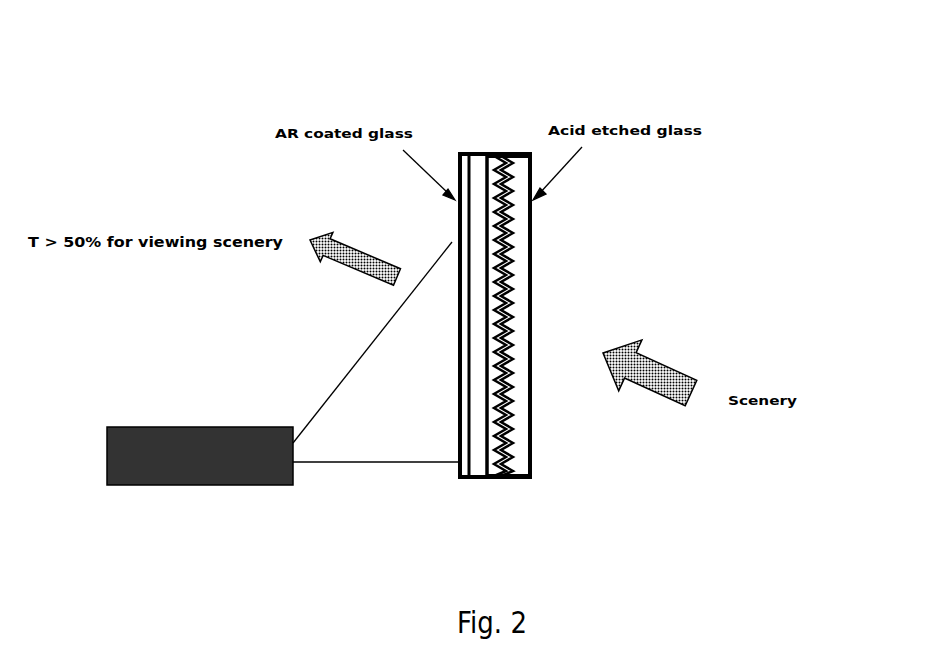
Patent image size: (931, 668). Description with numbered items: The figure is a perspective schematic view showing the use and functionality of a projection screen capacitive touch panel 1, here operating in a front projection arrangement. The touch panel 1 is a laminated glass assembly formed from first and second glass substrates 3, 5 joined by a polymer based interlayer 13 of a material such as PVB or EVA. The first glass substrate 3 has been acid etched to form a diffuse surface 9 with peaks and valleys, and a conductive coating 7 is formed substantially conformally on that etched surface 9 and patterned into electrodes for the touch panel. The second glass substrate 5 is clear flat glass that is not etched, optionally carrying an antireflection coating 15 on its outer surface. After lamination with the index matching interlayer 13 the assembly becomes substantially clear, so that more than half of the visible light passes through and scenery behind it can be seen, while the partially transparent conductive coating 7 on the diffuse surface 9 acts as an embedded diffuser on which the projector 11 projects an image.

The projected capacitive touch panel 1 is at (686, 2).
The first glass substrate 3 is at (522, 462).
The second glass substrate 5 is at (480, 482).
The conductive coating 7 is at (500, 152).
The diffuse surface 9 is at (514, 284).
The projector 11 is at (225, 487).
The polymer based interlayer 13 is at (490, 152).
The antireflection coating 15 is at (458, 467).